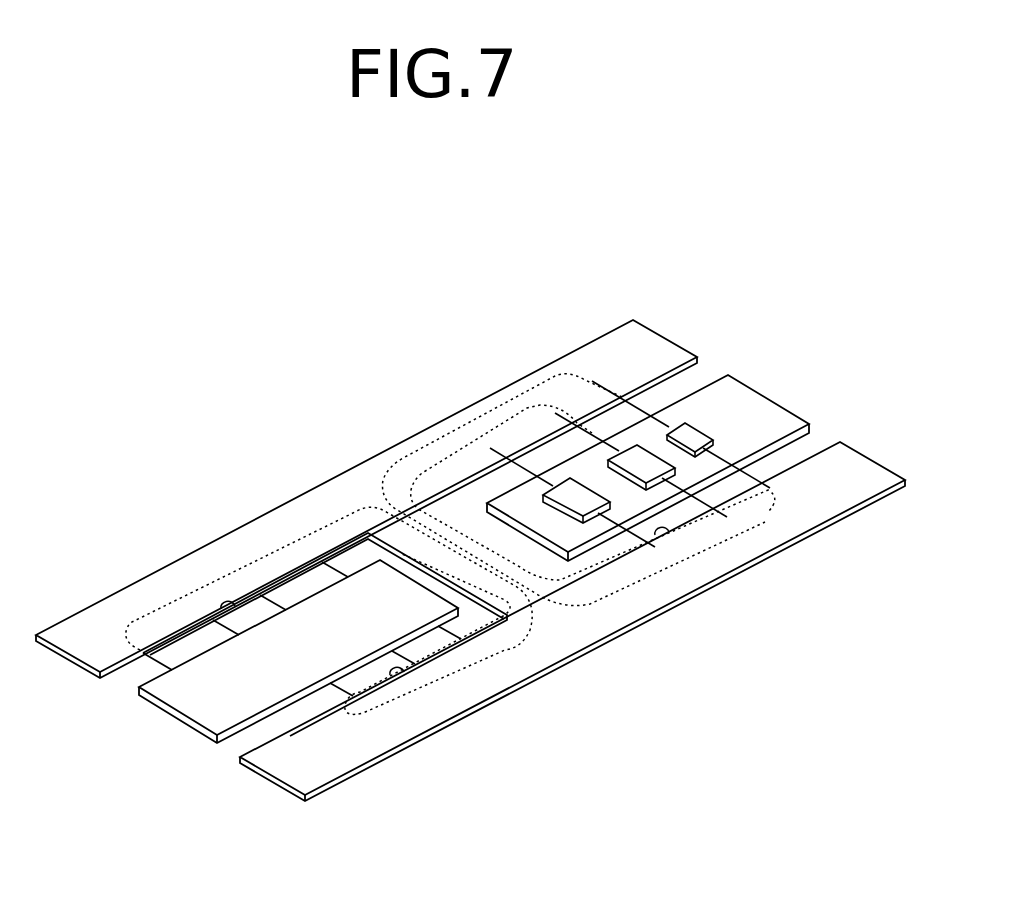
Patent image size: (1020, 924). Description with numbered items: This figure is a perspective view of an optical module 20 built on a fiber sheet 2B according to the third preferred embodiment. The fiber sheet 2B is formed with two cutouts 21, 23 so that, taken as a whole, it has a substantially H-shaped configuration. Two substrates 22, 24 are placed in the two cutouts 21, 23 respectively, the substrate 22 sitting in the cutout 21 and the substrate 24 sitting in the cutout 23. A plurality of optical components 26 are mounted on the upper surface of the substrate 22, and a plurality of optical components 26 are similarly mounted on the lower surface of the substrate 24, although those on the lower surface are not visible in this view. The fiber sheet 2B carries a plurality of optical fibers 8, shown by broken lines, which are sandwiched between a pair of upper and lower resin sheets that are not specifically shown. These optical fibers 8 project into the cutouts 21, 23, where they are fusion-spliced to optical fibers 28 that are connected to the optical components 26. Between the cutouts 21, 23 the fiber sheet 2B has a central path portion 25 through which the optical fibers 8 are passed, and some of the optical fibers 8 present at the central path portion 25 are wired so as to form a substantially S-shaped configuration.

The fiber sheet 2B is at (607, 348).
The optical module 20 is at (436, 376).
The optical fibers 8 is at (416, 448).
The cutout 21 is at (670, 536).
The substrate 22 is at (752, 398).
The cutout 23 is at (226, 606).
The substrate 24 is at (183, 717).
The central path portion 25 is at (478, 551).
The optical components 26 is at (690, 438).
The optical fibers 28 is at (588, 424).